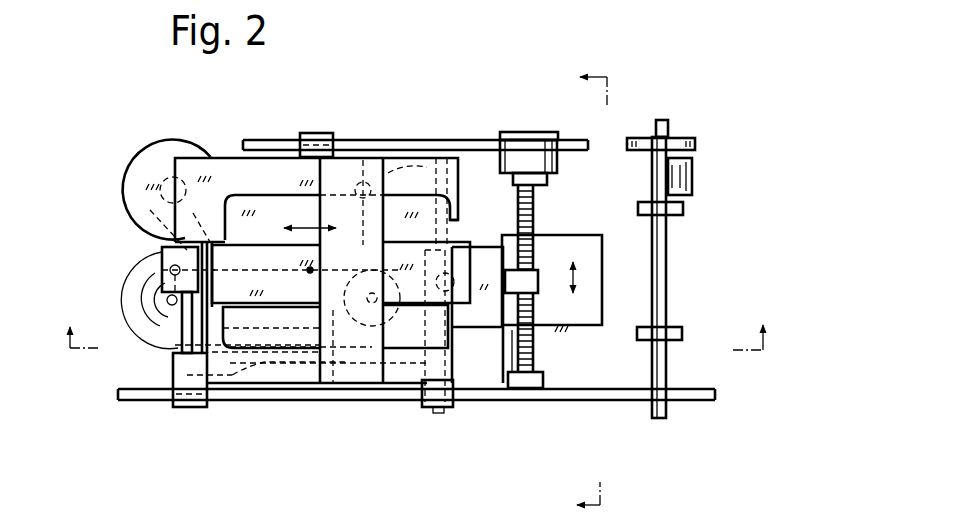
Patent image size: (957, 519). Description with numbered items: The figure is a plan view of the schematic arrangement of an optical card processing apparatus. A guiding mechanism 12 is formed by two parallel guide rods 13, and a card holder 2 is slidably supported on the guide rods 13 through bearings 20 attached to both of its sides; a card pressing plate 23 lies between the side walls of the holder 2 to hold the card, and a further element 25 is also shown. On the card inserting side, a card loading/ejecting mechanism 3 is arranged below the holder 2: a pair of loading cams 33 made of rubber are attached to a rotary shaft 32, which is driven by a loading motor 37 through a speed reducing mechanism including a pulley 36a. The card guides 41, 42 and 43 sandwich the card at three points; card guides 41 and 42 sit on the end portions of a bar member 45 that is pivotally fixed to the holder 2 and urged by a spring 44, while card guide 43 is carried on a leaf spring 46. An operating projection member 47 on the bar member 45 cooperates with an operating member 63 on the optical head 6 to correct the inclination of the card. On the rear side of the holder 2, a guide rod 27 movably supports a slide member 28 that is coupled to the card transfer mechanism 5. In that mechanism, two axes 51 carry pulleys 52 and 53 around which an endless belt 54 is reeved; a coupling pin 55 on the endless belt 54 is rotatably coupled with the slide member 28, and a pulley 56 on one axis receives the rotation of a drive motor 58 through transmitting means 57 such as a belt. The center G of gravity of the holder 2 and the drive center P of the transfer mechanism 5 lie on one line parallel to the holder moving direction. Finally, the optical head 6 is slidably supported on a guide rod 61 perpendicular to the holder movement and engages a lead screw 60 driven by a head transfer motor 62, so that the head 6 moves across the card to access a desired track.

The card holder 2 is at (246, 165).
The card loading/ejecting mechanism 3 is at (752, 139).
The card transfer mechanism 5 is at (98, 171).
The optical head 6 is at (482, 318).
The guiding mechanism 12 is at (392, 401).
The guide rods 13 is at (390, 140).
The bearings 20 is at (313, 133).
The card pressing plate 23 is at (293, 207).
The lower block 25 is at (263, 200).
The guide rod 27 is at (183, 340).
The slide member 28 is at (185, 235).
The rotary shaft 32 is at (677, 173).
The loading cams 33 is at (682, 214).
The pulley 36a is at (690, 138).
The loading motor 37 is at (692, 185).
The card guide 41 is at (249, 395).
The card guide 42 is at (447, 390).
The card guide 43 is at (362, 182).
The spring 44 is at (218, 402).
The bar member 45 is at (333, 385).
The leaf spring 46 is at (440, 168).
The operating projection member 47 is at (291, 395).
The axes 51 is at (127, 337).
The pulley 52 is at (165, 345).
The pulley 53 is at (366, 385).
The endless belt 54 is at (233, 240).
The coupling pin 55 is at (162, 250).
The pulley 56 is at (152, 275).
The transmitting means 57 is at (160, 250).
The drive motor 58 is at (152, 158).
The lead screw 60 is at (535, 207).
The guide rod 61 is at (447, 177).
The head transfer motor 62 is at (508, 132).
The operating member 63 is at (516, 388).
The center of gravity G is at (306, 285).
The drive center P is at (133, 305).